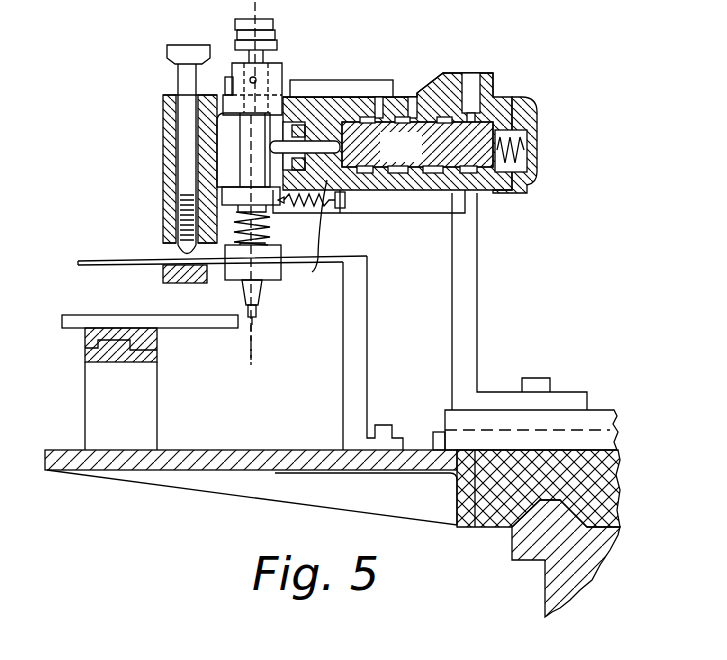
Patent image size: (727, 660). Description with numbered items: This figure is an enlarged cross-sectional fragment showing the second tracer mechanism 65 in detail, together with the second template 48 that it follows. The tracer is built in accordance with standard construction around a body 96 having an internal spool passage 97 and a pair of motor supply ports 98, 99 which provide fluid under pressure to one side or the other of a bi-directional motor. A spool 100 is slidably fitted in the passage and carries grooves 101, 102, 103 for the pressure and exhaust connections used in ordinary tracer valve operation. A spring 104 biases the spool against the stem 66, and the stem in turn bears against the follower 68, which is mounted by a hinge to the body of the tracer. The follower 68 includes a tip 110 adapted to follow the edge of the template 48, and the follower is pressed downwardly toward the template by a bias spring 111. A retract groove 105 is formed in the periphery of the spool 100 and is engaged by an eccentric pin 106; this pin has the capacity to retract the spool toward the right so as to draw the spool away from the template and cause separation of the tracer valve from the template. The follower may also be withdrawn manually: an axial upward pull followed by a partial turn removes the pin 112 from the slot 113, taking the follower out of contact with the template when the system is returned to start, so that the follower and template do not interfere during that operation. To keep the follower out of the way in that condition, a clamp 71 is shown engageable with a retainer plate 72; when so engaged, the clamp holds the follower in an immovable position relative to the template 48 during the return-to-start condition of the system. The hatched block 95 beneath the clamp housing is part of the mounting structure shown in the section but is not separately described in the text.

The second template 48 is at (193, 330).
The second tracer mechanism 65 is at (547, 80).
The stem 66 is at (288, 140).
The follower 68 is at (264, 294).
The clamp 71 is at (166, 52).
The retainer plate 72 is at (105, 258).
The block 95 is at (165, 276).
The body 96 is at (333, 97).
The spool passage 97 is at (350, 97).
The motor supply port 98 is at (382, 118).
The motor supply port 99 is at (410, 117).
The spool 100 is at (400, 166).
The groove 101 is at (360, 205).
The groove 102 is at (393, 178).
The groove 103 is at (434, 178).
The spring 104 is at (522, 147).
The retract groove 105 is at (474, 176).
The eccentric pin 106 is at (478, 119).
The tip 110 is at (253, 330).
The bias spring 111 is at (266, 242).
The pin 112 is at (248, 83).
The slot 113 is at (257, 77).